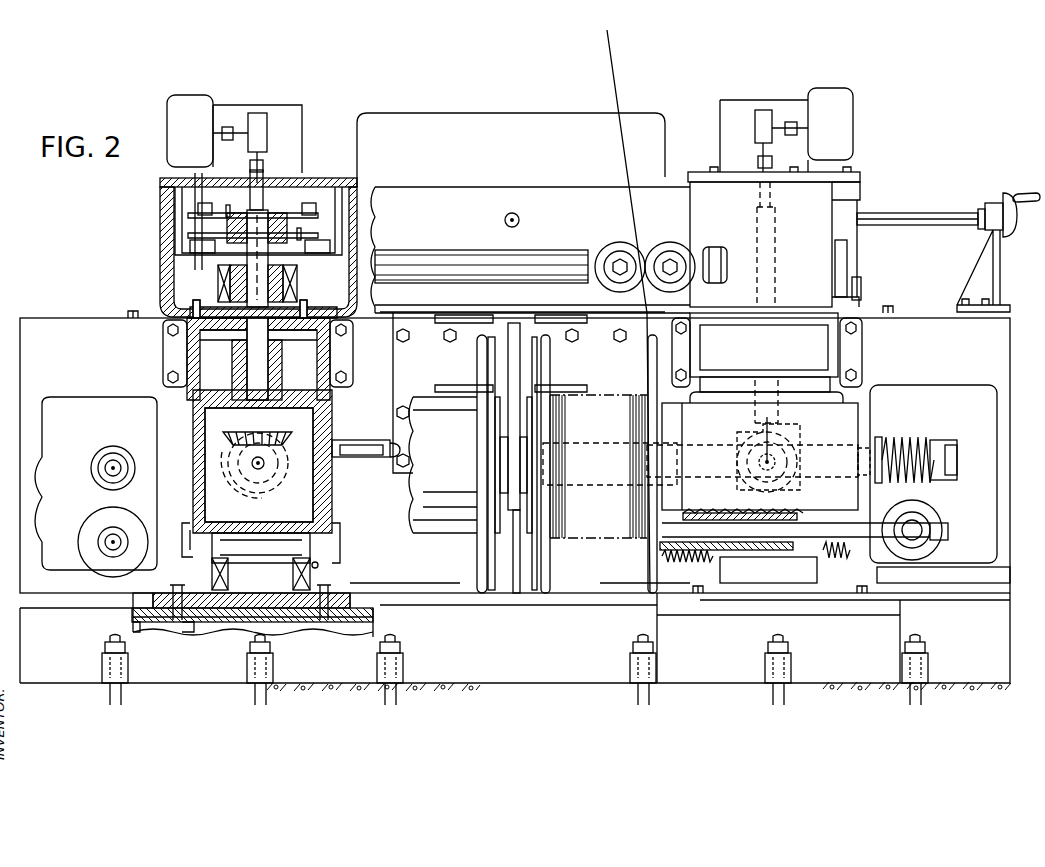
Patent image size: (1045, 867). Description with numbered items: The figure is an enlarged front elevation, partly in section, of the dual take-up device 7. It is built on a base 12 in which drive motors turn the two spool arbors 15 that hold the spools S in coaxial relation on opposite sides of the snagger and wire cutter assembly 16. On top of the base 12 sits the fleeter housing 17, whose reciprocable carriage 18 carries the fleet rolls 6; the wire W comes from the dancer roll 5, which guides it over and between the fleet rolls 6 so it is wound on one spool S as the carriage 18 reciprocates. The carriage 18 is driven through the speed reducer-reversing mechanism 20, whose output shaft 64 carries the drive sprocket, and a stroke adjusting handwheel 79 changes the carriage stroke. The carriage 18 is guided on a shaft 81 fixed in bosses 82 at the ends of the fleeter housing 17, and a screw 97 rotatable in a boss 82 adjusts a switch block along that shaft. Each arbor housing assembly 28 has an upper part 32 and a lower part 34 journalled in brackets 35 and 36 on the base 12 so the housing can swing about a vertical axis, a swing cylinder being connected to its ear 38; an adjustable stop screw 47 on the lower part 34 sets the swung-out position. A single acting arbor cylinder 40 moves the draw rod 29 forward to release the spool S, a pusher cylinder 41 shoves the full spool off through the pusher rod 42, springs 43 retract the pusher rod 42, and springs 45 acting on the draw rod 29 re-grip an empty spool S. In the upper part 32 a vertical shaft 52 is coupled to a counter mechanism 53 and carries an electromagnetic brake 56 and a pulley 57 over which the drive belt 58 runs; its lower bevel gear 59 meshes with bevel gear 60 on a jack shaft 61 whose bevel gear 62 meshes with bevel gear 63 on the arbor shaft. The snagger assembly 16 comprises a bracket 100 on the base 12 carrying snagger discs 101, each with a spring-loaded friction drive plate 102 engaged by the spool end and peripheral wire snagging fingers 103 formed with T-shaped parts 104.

The dancer roll 5 is at (257, 80).
The fleet rolls 6 is at (620, 247).
The dual take-up device 7 is at (870, 163).
The base 12 is at (512, 300).
The spool arbors 15 is at (762, 417).
The snagger and wire cutter assembly 16 is at (516, 538).
The fleeter housing 17 is at (815, 225).
The fleeter carriage 18 is at (700, 252).
The speed reducer-reversing mechanism 20 is at (558, 114).
The arbor housing assembly 28 is at (840, 430).
The draw rod 29 is at (950, 443).
The upper part of arbor housing 32 is at (210, 373).
The lower part of arbor housing 34 is at (213, 553).
The bracket 35 is at (163, 343).
The bracket 36 is at (332, 573).
The ear 38 is at (357, 460).
The arbor cylinder 40 is at (113, 446).
The pusher cylinder 41 is at (90, 515).
The pusher rod 42 is at (817, 530).
The springs 43 is at (833, 557).
The springs 45 is at (897, 440).
The adjustable stop screw 47 is at (318, 563).
The vertical shaft 52 is at (760, 157).
The counter mechanism 53 is at (181, 97).
The electromagnetic brake 56 is at (195, 240).
The pulley 57 is at (218, 286).
The drive belt 58 is at (218, 275).
The bevel gear 59 is at (227, 433).
The bevel gear 60 is at (237, 487).
The jack shaft 61 is at (248, 463).
The bevel gear 62 is at (752, 488).
The bevel gear 63 is at (800, 438).
The output shaft 64 is at (514, 213).
The stroke adjusting handwheel 79 is at (1017, 237).
The carriage guide shaft 81 is at (427, 256).
The bosses 82 is at (834, 262).
The screw 97 is at (861, 287).
The bracket 100 is at (520, 377).
The snagger discs 101 is at (487, 353).
The friction drive plate 102 is at (478, 418).
The wire snagging fingers 103 is at (490, 498).
The T-shaped part 104 is at (487, 462).
The spools S is at (480, 593).
The wire W is at (618, 50).